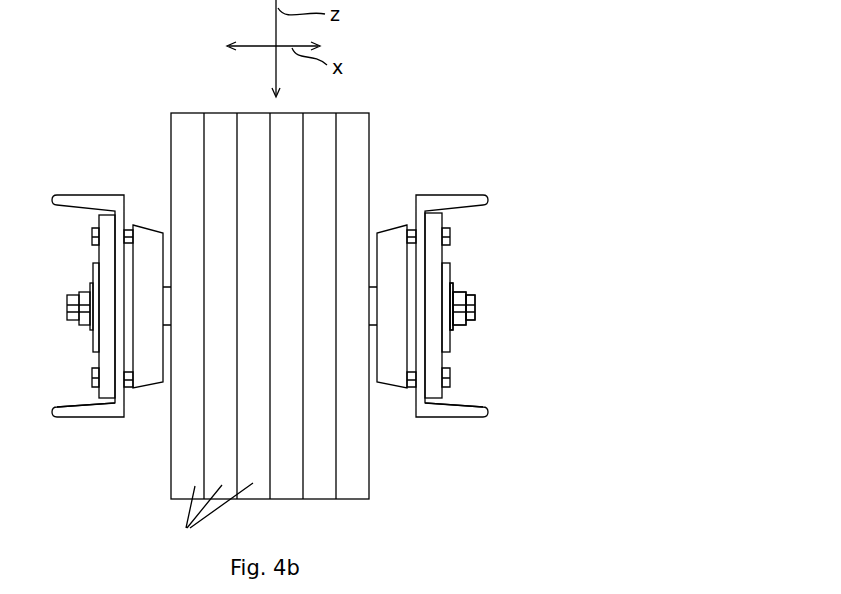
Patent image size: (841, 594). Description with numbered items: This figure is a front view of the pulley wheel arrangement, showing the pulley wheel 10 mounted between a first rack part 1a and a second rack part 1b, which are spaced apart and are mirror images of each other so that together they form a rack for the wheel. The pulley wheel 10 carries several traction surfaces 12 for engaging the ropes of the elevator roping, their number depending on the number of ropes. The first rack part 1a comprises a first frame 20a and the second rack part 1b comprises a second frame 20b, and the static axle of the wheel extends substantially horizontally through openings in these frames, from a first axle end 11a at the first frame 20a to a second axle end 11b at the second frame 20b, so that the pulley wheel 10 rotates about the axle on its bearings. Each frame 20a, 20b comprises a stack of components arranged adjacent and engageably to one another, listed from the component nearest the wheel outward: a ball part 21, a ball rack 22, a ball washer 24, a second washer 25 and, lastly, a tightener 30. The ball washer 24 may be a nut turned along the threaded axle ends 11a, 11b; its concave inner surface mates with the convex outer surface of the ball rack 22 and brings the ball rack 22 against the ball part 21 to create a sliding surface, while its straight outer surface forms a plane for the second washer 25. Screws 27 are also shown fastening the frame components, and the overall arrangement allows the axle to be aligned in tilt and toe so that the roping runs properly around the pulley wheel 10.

The pulley wheel 10 is at (262, 389).
The traction surface 12 is at (212, 519).
The first axle end 11a is at (478, 308).
The second axle end 11b is at (66, 306).
The first frame 20a is at (495, 188).
The second frame 20b is at (132, 179).
The ball part 21 is at (394, 228).
The ball rack 22 is at (437, 213).
The ball washer 24 is at (455, 332).
The second washer 25 is at (455, 287).
The fastening screws 27 is at (452, 237).
The tightener 30 is at (467, 293).
The first rack part 1a is at (445, 418).
The second rack part 1b is at (103, 418).